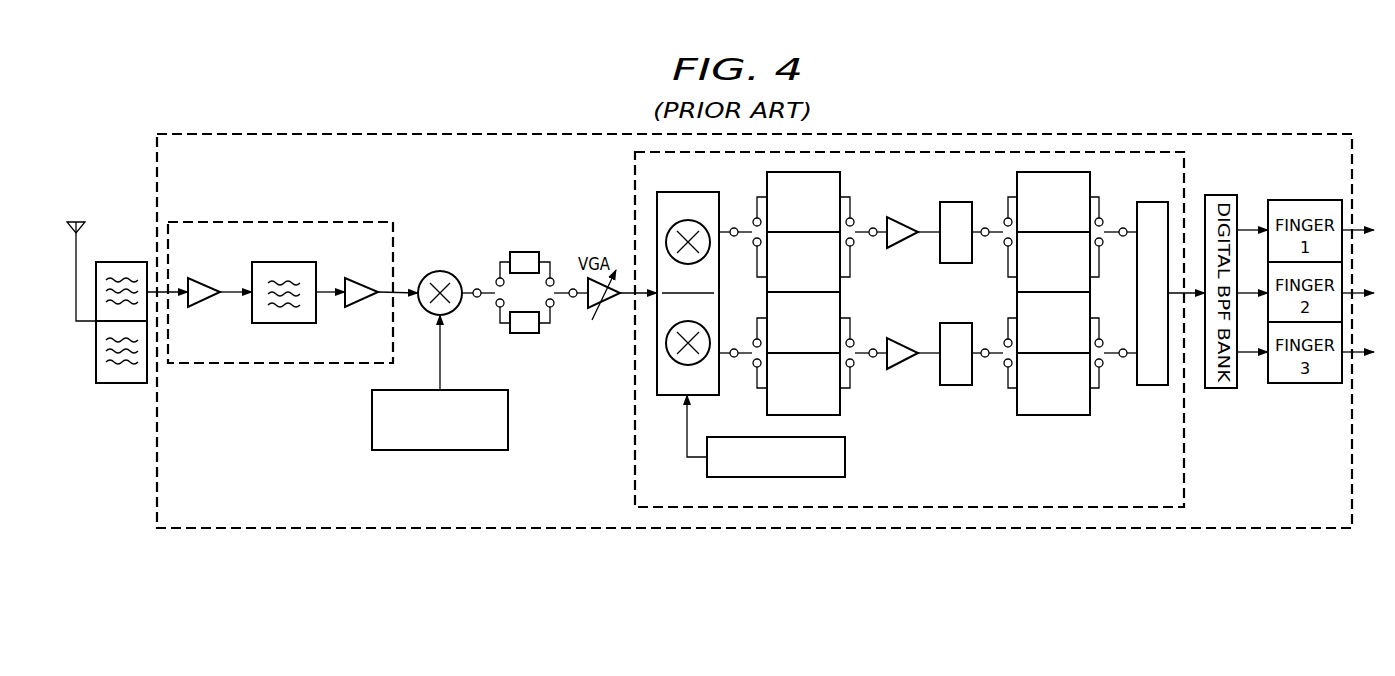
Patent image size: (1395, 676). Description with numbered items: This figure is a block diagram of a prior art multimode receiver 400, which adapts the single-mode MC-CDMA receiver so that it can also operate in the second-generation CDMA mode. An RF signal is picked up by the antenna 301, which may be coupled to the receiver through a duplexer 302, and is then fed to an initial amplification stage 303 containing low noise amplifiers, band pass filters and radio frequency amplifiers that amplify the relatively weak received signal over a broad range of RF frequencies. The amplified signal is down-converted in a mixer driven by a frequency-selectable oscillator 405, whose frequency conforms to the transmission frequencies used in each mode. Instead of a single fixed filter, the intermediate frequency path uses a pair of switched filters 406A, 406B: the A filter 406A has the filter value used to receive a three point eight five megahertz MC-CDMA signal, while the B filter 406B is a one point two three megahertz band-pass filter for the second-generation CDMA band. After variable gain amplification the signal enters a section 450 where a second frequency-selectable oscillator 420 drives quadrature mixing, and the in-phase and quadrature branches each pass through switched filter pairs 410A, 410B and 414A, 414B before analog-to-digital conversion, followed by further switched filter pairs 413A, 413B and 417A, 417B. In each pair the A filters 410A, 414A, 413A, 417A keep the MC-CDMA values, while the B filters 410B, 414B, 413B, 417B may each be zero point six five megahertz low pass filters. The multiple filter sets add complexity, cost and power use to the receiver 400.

The receiver 400 is at (156, 182).
The antenna 301 is at (85, 229).
The duplexer 302 is at (118, 384).
The initial amplification stage 303 is at (272, 222).
The oscillator 405 is at (372, 422).
The first switched filter 406A is at (525, 252).
The second switched filter 406B is at (525, 333).
The digital section 450 is at (635, 440).
The oscillator 420 is at (845, 455).
The switched filter 410A is at (803, 202).
The switched filter 410B is at (803, 262).
The switched filter 414A is at (803, 322).
The switched filter 414B is at (803, 384).
The switched filter 413A is at (1053, 202).
The switched filter 413B is at (1053, 262).
The switched filter 417A is at (1053, 322).
The switched filter 417B is at (1053, 384).